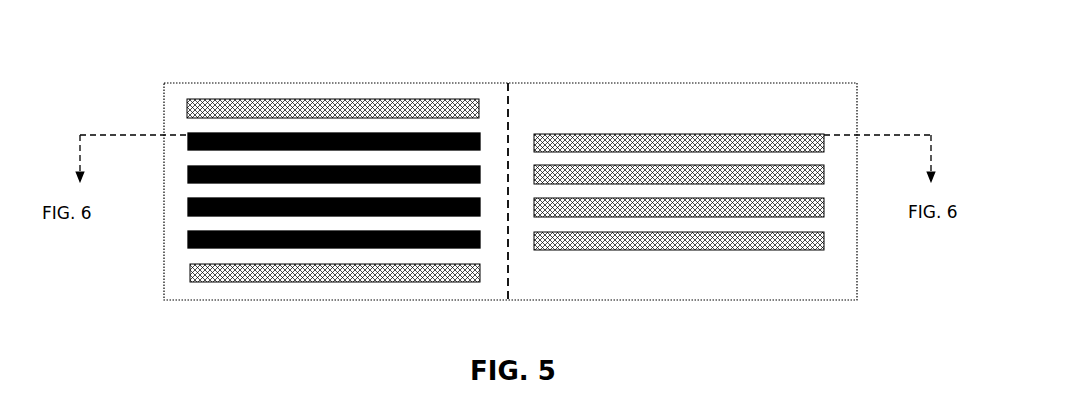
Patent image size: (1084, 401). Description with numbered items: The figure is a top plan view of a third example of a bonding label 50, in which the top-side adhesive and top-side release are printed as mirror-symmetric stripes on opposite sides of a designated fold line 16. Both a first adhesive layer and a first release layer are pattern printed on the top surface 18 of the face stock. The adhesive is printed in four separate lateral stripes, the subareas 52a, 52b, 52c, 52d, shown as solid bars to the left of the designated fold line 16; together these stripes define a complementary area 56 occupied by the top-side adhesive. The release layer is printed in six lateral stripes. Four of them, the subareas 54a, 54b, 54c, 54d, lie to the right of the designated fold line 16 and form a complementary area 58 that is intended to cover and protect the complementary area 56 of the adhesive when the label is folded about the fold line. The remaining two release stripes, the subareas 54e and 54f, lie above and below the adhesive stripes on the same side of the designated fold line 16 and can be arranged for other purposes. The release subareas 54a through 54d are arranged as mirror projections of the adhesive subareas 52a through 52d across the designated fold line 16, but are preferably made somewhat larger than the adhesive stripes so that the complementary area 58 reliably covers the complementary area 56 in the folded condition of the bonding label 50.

The designated fold line 16 is at (506, 92).
The top surface 18 is at (187, 90).
The bonding label 50 is at (564, 55).
The subarea of the first adhesive layer 52a is at (188, 147).
The subarea of the first adhesive layer 52b is at (188, 180).
The subarea of the first adhesive layer 52c is at (188, 212).
The subarea of the first adhesive layer 52d is at (188, 245).
The subarea of the first release layer 54a is at (826, 145).
The subarea of the first release layer 54b is at (826, 177).
The subarea of the first release layer 54c is at (826, 212).
The subarea of the first release layer 54d is at (826, 242).
The subarea of the first release layer 54e is at (187, 111).
The subarea of the first release layer 54f is at (190, 272).
The complementary area of the top-side adhesive 56 is at (352, 130).
The complementary area of the top-side release 58 is at (702, 130).